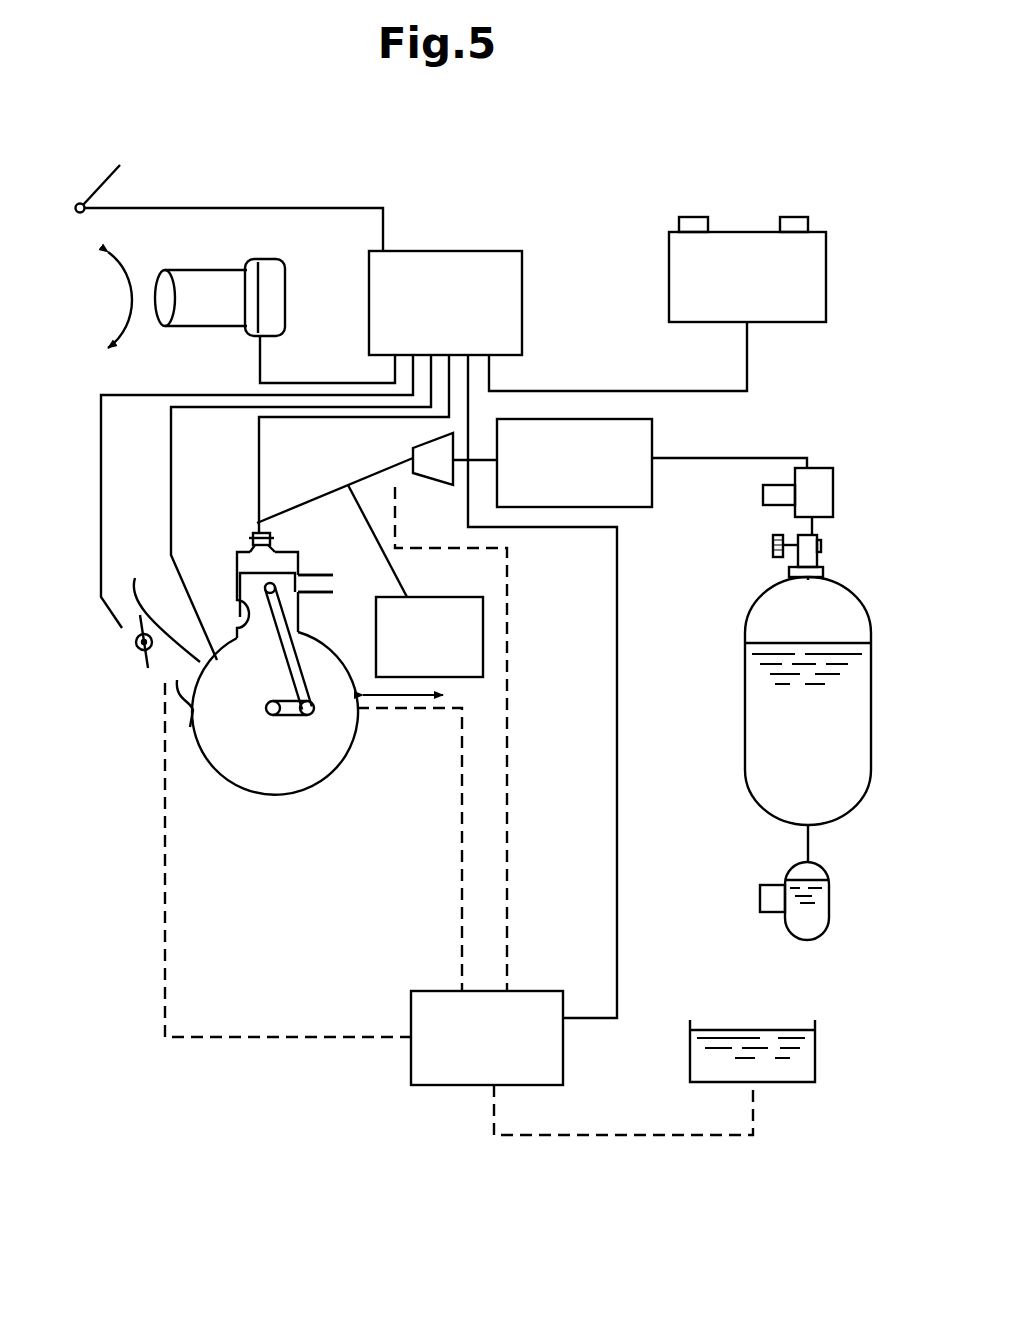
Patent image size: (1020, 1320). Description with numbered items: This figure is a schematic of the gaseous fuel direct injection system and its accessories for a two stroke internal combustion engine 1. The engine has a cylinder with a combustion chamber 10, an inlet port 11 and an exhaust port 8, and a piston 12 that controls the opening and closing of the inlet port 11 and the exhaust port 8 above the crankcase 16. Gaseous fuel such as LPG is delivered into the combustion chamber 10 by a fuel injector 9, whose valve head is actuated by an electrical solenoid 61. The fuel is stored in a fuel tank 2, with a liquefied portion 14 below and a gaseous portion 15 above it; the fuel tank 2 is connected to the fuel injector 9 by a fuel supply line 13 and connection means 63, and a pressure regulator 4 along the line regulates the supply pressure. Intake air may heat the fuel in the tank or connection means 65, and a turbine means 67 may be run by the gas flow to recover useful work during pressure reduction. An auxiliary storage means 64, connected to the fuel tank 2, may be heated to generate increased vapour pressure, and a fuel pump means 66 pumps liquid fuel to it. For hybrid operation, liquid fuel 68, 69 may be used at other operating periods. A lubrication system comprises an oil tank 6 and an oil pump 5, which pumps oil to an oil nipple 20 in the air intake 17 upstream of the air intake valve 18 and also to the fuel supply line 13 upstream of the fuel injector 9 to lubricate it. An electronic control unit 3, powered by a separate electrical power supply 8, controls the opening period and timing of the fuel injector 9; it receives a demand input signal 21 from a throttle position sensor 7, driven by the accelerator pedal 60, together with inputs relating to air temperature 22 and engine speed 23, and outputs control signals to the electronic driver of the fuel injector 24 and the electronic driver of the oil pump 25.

The two stroke internal combustion engine 1 is at (250, 805).
The fuel tank 2 is at (745, 748).
The electronic control unit 3 is at (522, 280).
The pressure regulator 4 is at (652, 432).
The oil pump 5 is at (411, 1013).
The oil tank 6 is at (779, 1030).
The throttle position sensor 7 is at (268, 270).
The electrical power supply 8 is at (826, 255).
The fuel injector 9 is at (250, 537).
The combustion chamber 10 is at (293, 565).
The inlet port 11 is at (230, 612).
The piston 12 is at (239, 578).
The fuel supply line 13 is at (770, 458).
The liquefied portion of LPG 14 is at (767, 713).
The gaseous portion of LPG 15 is at (767, 612).
The crankcase 16 is at (326, 760).
The air intake 17 is at (144, 670).
The air intake valve 18 is at (186, 735).
The oil nipple 20 is at (153, 680).
The demand input signal 21 is at (268, 374).
The air temperature input signal 22 is at (101, 472).
The engine speed input signal 23 is at (171, 556).
The electronic driver of the fuel injector 24 is at (262, 472).
The electronic driver of the oil pump 25 is at (468, 412).
The accelerator pedal 60 is at (110, 176).
The electrical solenoid 61 is at (273, 540).
The connection means 63 is at (833, 472).
The auxiliary storage means 64 is at (830, 892).
The intake air heating of fuel 65 is at (763, 496).
The fuel pump 66 is at (760, 898).
The turbine means 67 is at (430, 485).
The liquid fuel 68 is at (483, 640).
The liquid fuel 69 is at (350, 485).